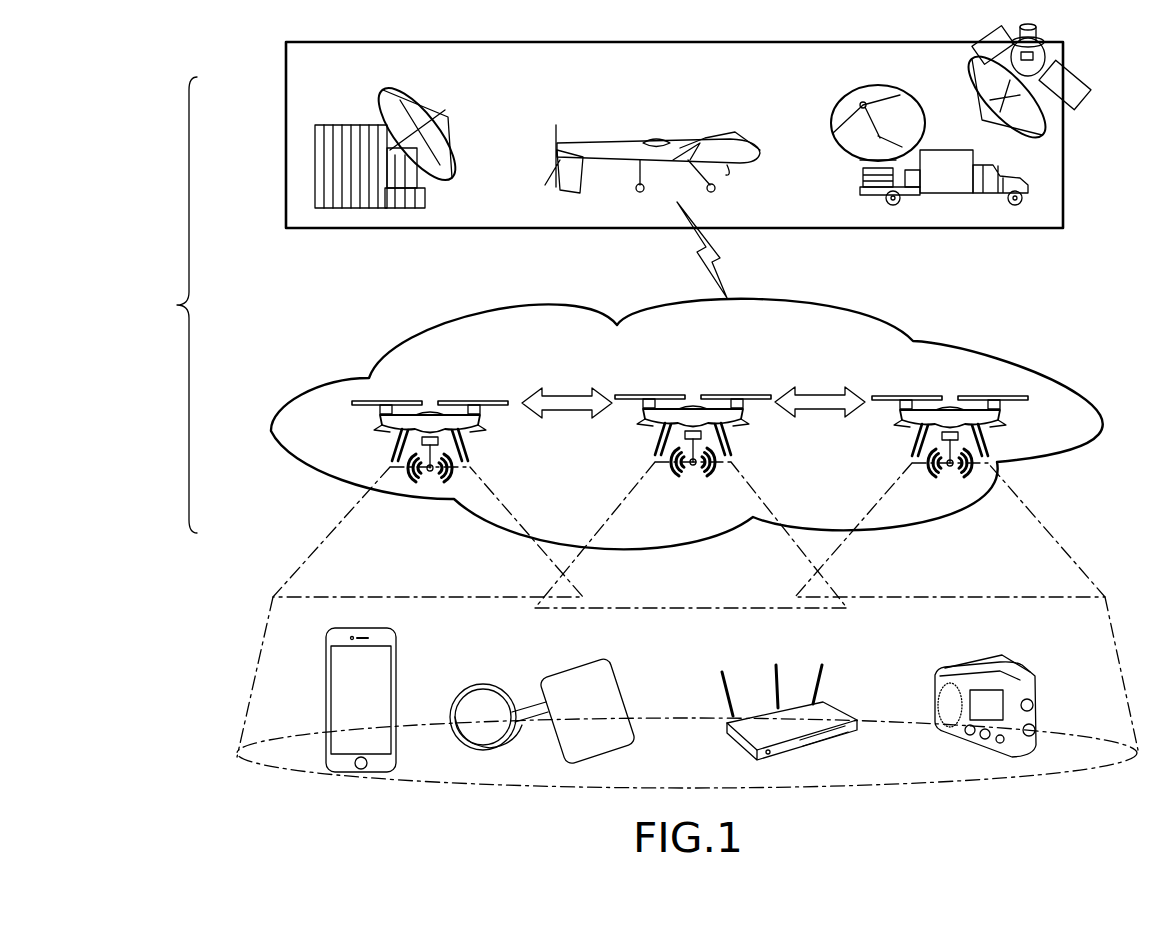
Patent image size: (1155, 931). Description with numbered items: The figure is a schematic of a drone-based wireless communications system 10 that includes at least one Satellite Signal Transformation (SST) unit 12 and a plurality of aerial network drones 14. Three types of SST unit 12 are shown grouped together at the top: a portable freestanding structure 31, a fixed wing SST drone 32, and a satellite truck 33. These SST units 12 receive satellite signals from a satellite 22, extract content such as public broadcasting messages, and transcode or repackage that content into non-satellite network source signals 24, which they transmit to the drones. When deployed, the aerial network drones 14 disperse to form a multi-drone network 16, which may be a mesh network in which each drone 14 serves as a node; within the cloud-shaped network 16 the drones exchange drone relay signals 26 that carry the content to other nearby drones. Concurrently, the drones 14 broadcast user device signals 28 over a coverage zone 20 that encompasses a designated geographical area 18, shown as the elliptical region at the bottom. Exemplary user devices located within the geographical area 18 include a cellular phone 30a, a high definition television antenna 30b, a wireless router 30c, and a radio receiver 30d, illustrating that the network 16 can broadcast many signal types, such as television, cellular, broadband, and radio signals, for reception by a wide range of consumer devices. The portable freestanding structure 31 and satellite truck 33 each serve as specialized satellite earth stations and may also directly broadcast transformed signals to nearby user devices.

The drone-based wireless communications system 10 is at (177, 305).
The Satellite Signal Transformation (SST) unit 12 is at (825, 71).
The aerial network drone 14 is at (383, 414).
The multi-drone network 16 is at (875, 342).
The geographical area 18 is at (703, 777).
The coverage zone 20 is at (301, 632).
The satellite 22 is at (1092, 104).
The network source signal 24 is at (692, 250).
The drone relay signal 26 is at (558, 397).
The user device signal 28 is at (441, 561).
The cellular phone 30a is at (398, 653).
The high definition television (HDTV) antenna 30b is at (628, 668).
The wireless router 30c is at (843, 703).
The radio receiver 30d is at (1035, 680).
The portable freestanding structure 31 is at (426, 204).
The fixed wing SST drone 32 is at (727, 137).
The satellite truck 33 is at (845, 160).